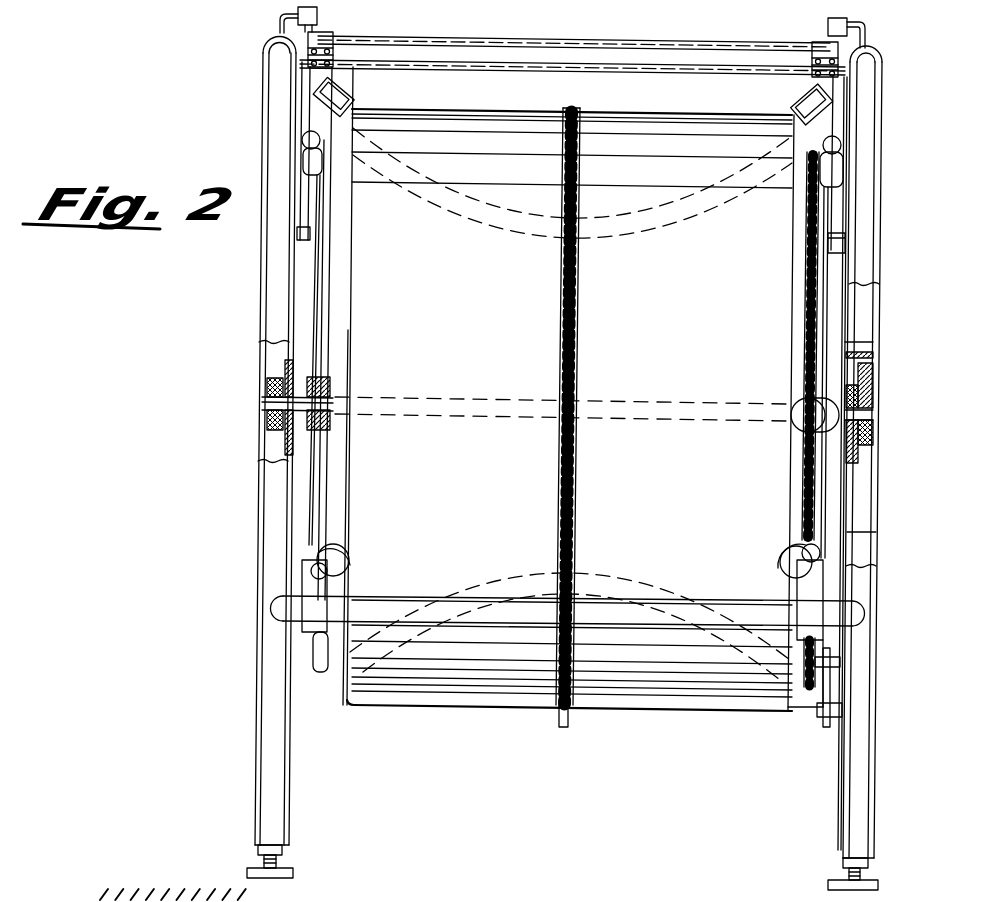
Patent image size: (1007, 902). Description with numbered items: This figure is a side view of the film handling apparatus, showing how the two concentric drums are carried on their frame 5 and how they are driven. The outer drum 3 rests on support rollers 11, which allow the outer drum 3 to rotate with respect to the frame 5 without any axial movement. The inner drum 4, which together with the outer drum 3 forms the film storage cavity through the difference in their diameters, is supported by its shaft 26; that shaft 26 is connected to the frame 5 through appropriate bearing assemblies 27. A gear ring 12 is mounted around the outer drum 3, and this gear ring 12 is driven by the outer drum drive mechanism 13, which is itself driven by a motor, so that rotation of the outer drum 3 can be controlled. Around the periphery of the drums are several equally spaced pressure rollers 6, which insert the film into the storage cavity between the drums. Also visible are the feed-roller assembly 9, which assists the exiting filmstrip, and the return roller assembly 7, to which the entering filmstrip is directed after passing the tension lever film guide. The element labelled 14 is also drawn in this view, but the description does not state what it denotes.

The outer drum 3 is at (457, 707).
The inner drum 4 is at (347, 656).
The frame 5 is at (278, 785).
The pressure rollers 6 is at (805, 404).
The return roller assembly 7 is at (833, 168).
The feed-roller assembly 9 is at (313, 160).
The support rollers 11 is at (348, 107).
The gear ring 12 is at (563, 503).
The outer drum drive mechanism 13 is at (803, 710).
The hanger bracket 14 is at (318, 33).
The shaft 26 is at (315, 383).
The bearing assemblies 27 is at (277, 382).